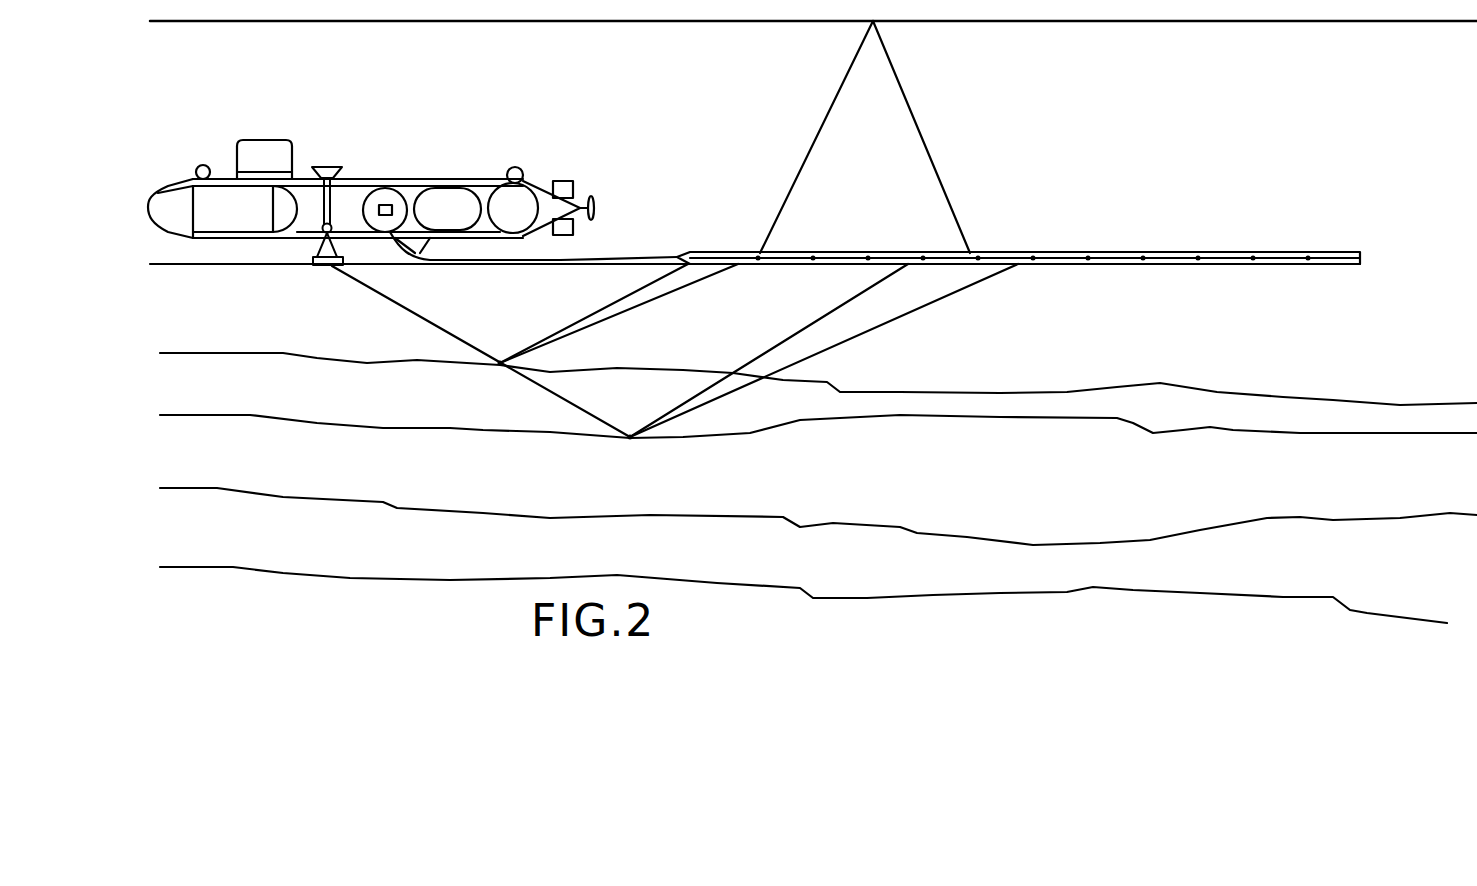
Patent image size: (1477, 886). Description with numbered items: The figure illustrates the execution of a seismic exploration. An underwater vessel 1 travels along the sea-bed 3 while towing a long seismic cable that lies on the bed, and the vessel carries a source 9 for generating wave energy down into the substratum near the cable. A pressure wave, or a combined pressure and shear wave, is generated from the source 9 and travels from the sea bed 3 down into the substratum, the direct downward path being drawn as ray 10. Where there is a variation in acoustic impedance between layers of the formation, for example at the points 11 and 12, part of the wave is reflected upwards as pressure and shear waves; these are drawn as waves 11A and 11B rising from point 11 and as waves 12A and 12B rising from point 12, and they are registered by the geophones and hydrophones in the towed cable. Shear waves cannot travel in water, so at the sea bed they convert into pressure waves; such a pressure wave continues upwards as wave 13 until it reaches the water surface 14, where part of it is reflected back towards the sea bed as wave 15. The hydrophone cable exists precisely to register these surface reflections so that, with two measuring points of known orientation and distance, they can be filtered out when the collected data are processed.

The underwater vessel 1 is at (406, 178).
The sea-bed 3 is at (214, 268).
The source 9 is at (327, 268).
The direct seismic ray path 10 is at (467, 348).
The reflection point 11 is at (496, 366).
The reflected wave 11A is at (597, 313).
The reflected wave 11B is at (653, 303).
The reflection point 12 is at (629, 440).
The reflected wave 12A is at (807, 328).
The reflected wave 12B is at (920, 310).
The pressure wave 13 is at (793, 172).
The water surface 14 is at (997, 22).
The reflected wave 15 is at (920, 118).